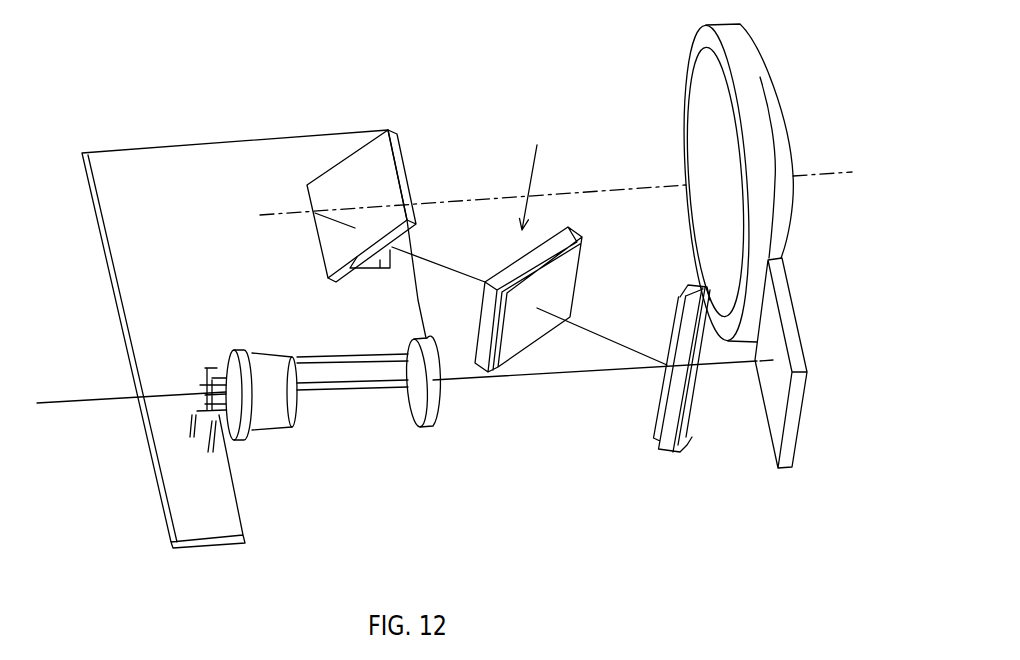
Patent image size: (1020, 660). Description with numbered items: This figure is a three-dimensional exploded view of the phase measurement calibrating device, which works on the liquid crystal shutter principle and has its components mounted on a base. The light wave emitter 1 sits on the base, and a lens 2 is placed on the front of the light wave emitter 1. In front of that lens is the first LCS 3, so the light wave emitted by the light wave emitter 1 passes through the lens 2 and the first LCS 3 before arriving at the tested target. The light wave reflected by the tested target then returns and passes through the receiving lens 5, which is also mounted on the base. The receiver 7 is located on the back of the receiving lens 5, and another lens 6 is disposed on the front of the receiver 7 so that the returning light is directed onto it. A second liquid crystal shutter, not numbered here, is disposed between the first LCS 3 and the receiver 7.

The light wave emitter 1 is at (260, 456).
The lens 2 is at (421, 445).
The first LCS 3 is at (694, 462).
The receiving lens 5 is at (661, 92).
The lens 6 is at (322, 143).
The receiver 7 is at (393, 246).